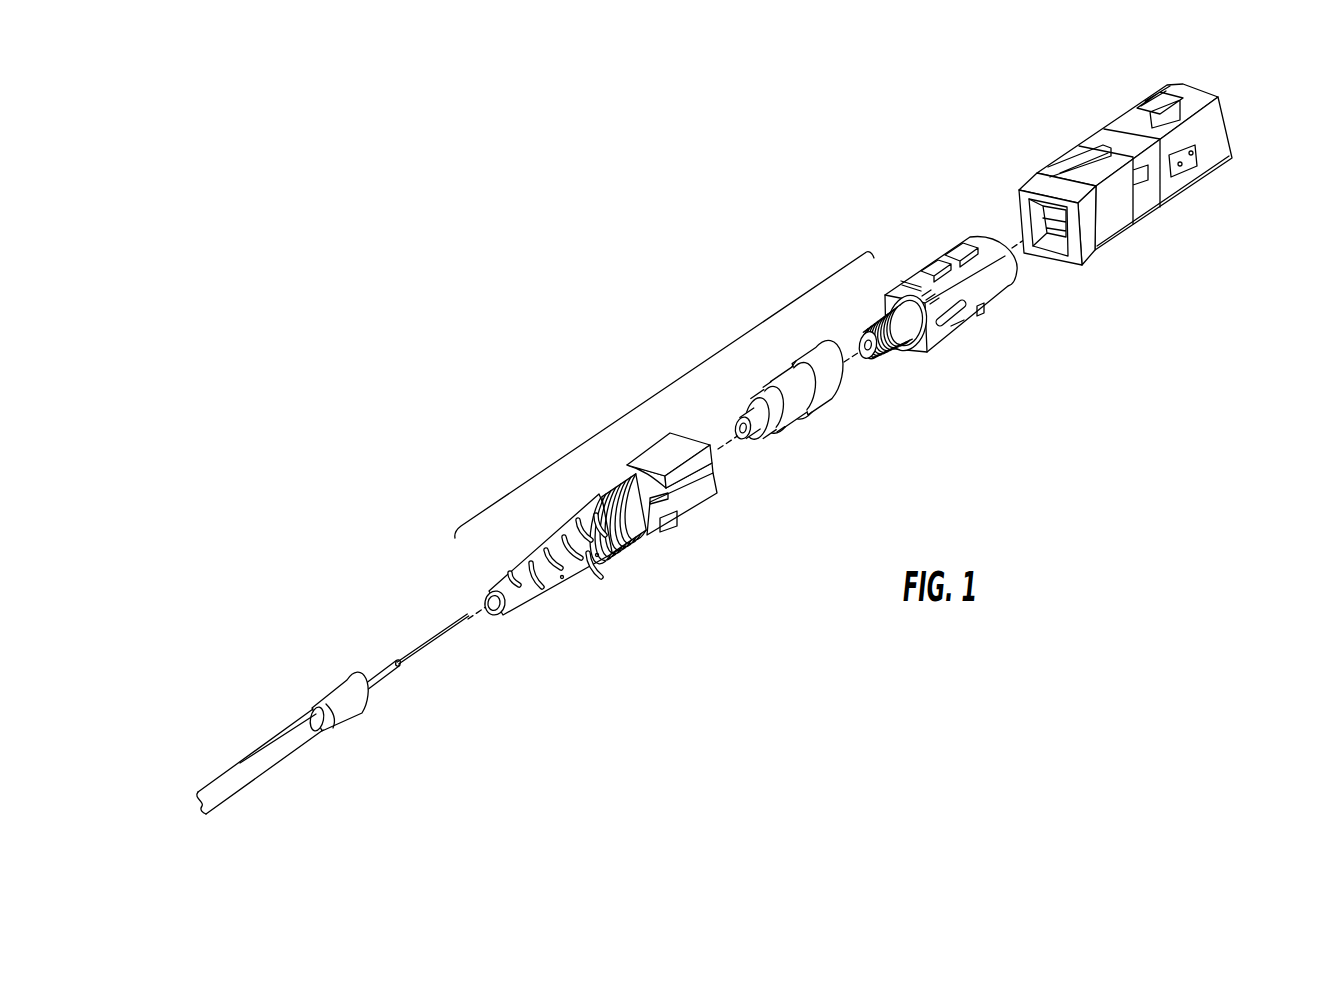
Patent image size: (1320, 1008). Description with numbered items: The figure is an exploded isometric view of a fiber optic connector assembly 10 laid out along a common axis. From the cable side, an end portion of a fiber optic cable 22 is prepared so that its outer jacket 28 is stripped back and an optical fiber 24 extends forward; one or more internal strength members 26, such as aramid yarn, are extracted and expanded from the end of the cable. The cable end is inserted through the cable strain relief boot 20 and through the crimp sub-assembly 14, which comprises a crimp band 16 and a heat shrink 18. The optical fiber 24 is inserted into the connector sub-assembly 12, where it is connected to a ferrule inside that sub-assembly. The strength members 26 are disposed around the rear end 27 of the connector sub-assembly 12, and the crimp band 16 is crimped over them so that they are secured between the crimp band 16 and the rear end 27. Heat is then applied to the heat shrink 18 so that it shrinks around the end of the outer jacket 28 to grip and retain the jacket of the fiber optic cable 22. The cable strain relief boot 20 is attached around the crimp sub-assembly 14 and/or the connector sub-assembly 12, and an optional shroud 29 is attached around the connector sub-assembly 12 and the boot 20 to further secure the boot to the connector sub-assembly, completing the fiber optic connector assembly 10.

The fiber optic connector assembly 10 is at (723, 606).
The connector sub-assembly 12 is at (937, 308).
The crimp sub-assembly 14 is at (676, 378).
The crimp band 16 is at (823, 408).
The heat shrink 18 is at (780, 432).
The cable strain relief boot 20 is at (635, 542).
The fiber optic cable 22 is at (275, 745).
The optical fiber 24 is at (437, 649).
The internal strength members 26 is at (360, 718).
The rear end 27 is at (893, 358).
The outer jacket 28 is at (308, 741).
The shroud 29 is at (1142, 222).